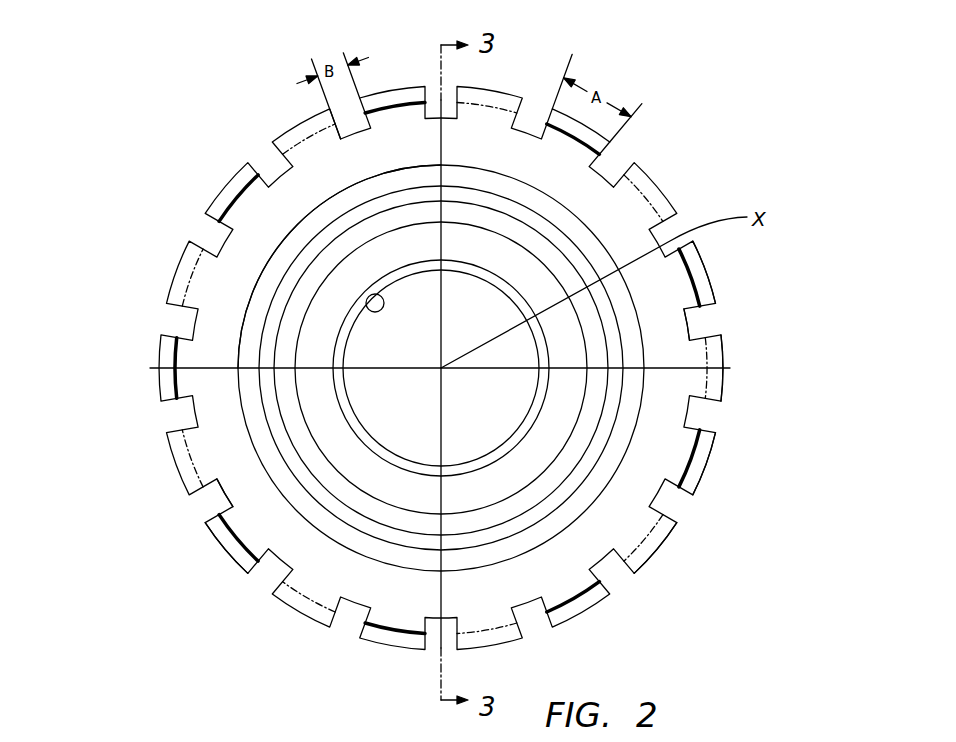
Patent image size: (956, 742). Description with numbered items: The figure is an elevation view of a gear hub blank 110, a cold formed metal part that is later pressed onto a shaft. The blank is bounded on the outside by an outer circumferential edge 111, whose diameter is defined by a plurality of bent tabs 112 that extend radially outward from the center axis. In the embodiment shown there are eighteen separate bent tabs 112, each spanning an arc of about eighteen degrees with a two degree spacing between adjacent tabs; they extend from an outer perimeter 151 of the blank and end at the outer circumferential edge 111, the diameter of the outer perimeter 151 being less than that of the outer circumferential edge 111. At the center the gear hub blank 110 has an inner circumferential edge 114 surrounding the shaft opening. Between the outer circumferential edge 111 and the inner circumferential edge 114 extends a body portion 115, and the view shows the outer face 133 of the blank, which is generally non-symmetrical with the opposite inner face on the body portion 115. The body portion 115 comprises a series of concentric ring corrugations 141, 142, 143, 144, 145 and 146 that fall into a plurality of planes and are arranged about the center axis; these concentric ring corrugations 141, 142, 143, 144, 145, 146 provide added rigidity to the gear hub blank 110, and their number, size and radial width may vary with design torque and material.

The gear hub blank 110 is at (693, 193).
The outer circumferential edge 111 is at (710, 270).
The bent tabs 112 is at (667, 550).
The inner circumferential edge 114 is at (360, 312).
The body portion 115 is at (525, 253).
The outer face 133 is at (268, 283).
The concentric ring corrugation 141 is at (335, 337).
The concentric ring corrugation 142 is at (310, 348).
The concentric ring corrugation 143 is at (280, 361).
The concentric ring corrugation 144 is at (277, 399).
The concentric ring corrugation 145 is at (258, 440).
The concentric ring corrugation 146 is at (238, 487).
The outer perimeter 151 is at (710, 327).